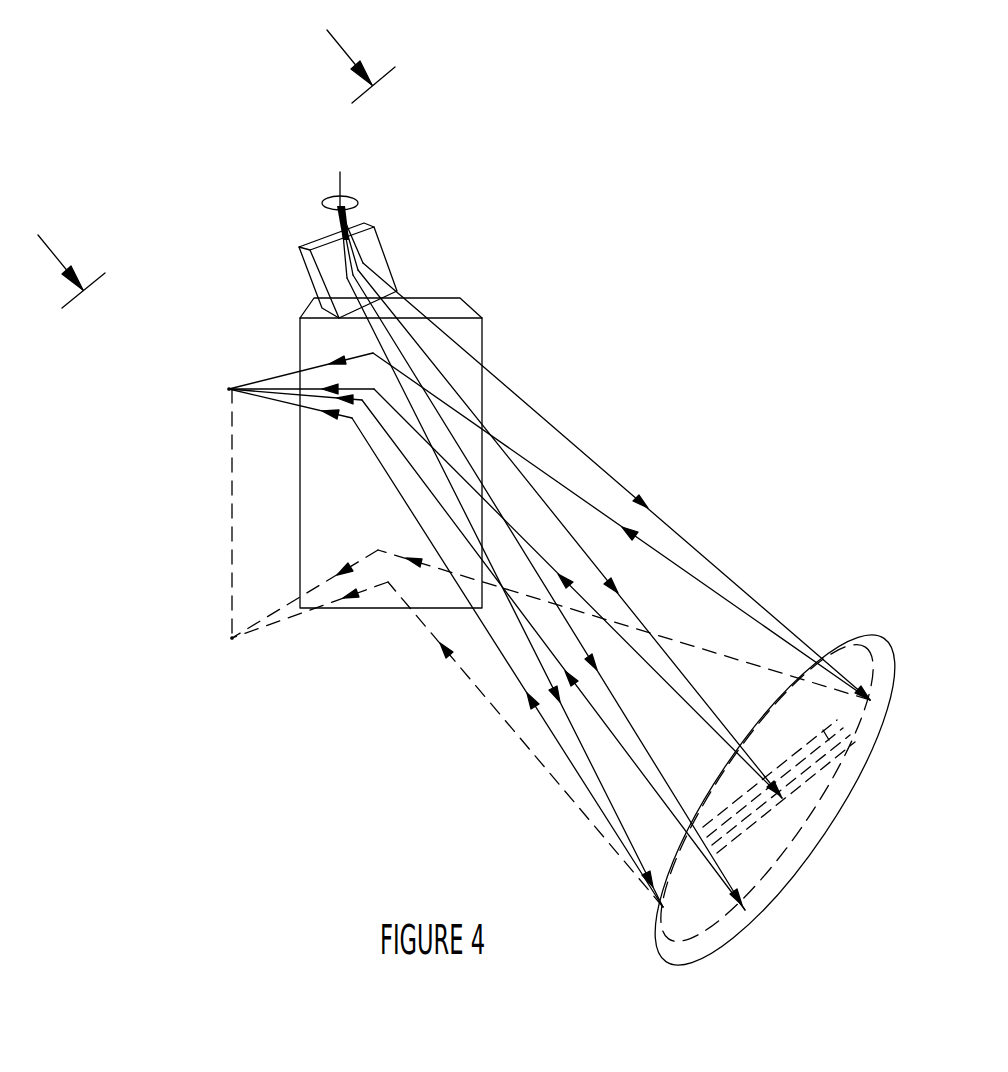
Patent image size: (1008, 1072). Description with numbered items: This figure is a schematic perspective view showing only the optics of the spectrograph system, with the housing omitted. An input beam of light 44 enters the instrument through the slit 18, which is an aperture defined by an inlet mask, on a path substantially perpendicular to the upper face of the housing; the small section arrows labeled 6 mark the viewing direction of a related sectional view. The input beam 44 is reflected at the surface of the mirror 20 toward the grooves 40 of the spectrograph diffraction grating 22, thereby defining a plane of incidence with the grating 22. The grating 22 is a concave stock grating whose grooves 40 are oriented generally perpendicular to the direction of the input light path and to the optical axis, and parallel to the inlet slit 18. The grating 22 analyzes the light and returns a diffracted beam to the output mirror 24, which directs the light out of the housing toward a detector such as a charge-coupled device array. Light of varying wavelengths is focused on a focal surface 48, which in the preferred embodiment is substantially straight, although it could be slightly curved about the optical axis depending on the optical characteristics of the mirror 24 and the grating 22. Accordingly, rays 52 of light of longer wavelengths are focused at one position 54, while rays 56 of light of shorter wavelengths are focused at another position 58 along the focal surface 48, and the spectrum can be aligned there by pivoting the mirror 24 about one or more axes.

The section view direction indicator 6 is at (216, 158).
The slit 18 is at (356, 195).
The mirror 20 is at (376, 249).
The spectrograph diffraction grating 22 is at (865, 640).
The output mirror 24 is at (475, 335).
The grooves 40 is at (822, 730).
The input beam of light 44 is at (326, 200).
The focal surface 48 is at (226, 488).
The rays of light of longer wavelengths 52 is at (292, 404).
The position 54 is at (229, 389).
The rays of light of shorter wavelengths 56 is at (292, 616).
The position 58 is at (232, 638).